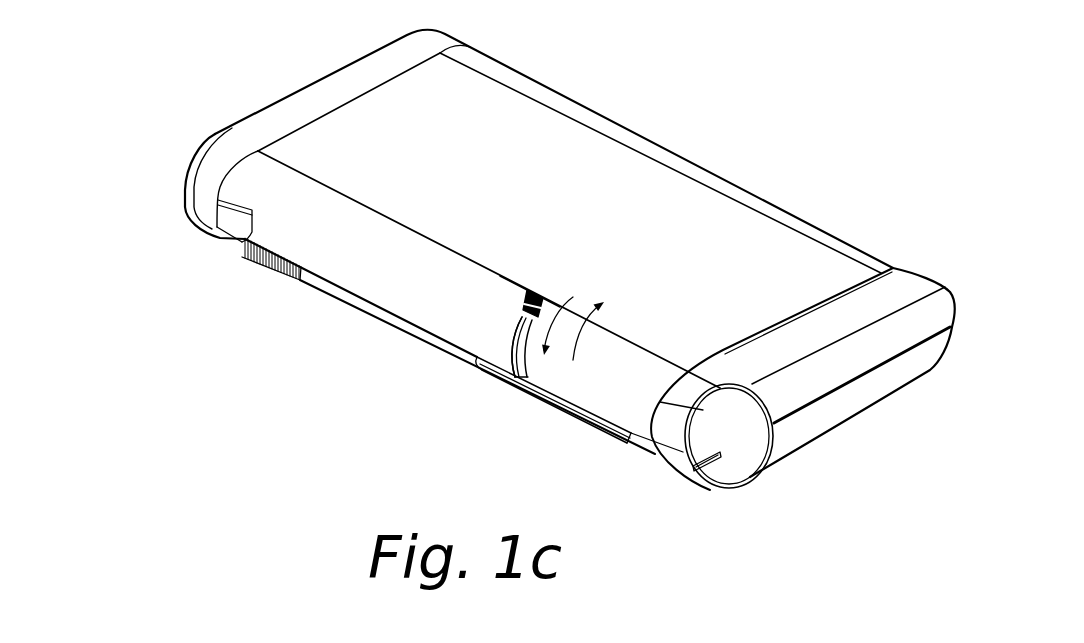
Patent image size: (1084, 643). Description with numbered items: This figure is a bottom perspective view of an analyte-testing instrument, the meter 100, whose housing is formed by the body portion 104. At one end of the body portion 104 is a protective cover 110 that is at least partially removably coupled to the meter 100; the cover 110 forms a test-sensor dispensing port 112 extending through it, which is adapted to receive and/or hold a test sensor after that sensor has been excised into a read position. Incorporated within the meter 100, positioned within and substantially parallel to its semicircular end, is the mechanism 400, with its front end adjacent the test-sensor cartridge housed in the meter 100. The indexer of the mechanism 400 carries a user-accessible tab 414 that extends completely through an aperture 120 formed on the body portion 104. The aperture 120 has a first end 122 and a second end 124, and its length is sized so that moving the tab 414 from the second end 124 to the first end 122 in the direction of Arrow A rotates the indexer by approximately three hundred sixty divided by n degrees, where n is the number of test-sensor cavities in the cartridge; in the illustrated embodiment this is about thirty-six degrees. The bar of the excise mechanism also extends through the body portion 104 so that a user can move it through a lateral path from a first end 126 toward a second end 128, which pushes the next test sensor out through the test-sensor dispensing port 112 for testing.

The meter 100 is at (866, 88).
The body portion 104 is at (493, 88).
The protective cover 110 is at (889, 292).
The test-sensor dispensing port 112 is at (713, 466).
The aperture 120 is at (532, 284).
The first end of the aperture 122 is at (546, 297).
The second end of the aperture 124 is at (510, 383).
The first end of the path of the bar 126 is at (238, 187).
The second end of the path of the bar 128 is at (642, 428).
The mechanism 400 is at (266, 305).
The user-accessible tab 414 is at (526, 310).